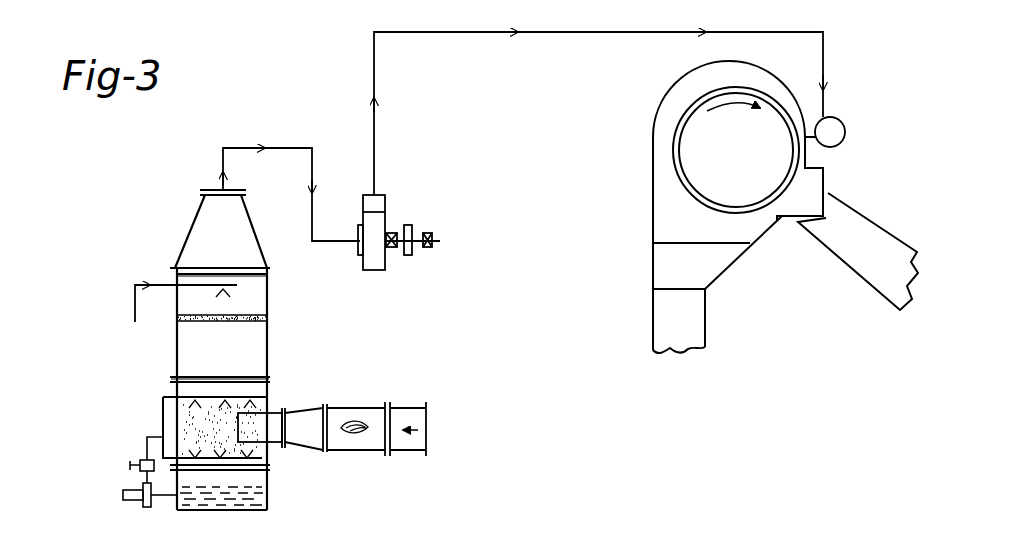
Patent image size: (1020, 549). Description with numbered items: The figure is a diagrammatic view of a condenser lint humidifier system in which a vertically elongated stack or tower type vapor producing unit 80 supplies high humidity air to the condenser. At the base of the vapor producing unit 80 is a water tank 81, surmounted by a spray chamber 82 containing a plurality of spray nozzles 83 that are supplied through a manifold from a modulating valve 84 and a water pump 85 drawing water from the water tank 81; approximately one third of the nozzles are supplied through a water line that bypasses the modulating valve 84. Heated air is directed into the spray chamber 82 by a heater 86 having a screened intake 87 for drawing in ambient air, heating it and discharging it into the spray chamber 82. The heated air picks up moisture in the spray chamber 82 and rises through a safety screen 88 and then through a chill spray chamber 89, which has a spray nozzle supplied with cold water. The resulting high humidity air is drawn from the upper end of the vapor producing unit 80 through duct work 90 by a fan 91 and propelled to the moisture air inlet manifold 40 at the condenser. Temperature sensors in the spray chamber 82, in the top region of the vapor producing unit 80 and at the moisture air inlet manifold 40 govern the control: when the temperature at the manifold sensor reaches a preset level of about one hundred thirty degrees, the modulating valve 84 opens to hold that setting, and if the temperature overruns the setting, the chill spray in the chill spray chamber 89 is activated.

The moisture air inlet manifold 40 is at (846, 118).
The vapor producing unit 80 is at (204, 514).
The water tank 81 is at (270, 490).
The spray chamber 82 is at (258, 380).
The spray nozzles 83 is at (164, 398).
The modulating valve 84 is at (143, 460).
The water pump 85 is at (146, 509).
The heater 86 is at (358, 408).
The screened intake 87 is at (428, 440).
The safety screen 88 is at (253, 318).
The chill spray chamber 89 is at (266, 300).
The duct work 90 is at (286, 147).
The fan 91 is at (386, 212).